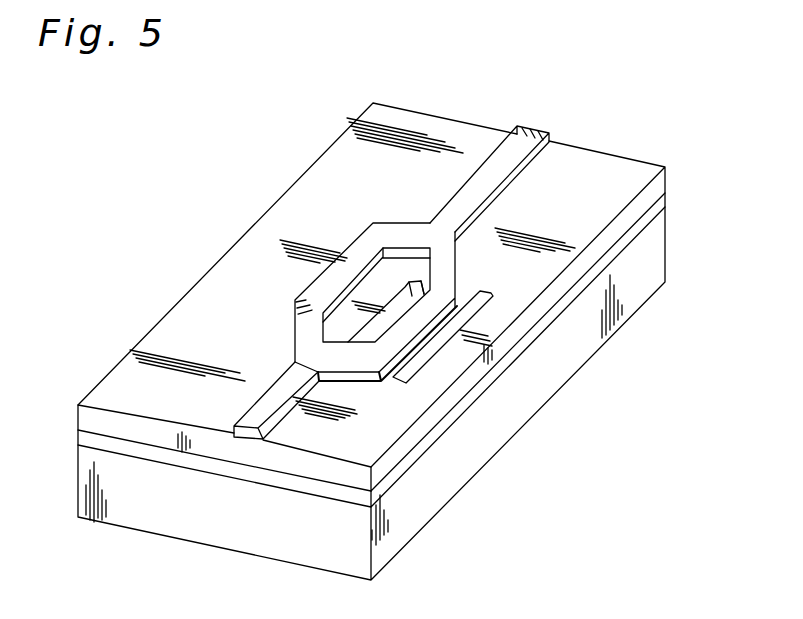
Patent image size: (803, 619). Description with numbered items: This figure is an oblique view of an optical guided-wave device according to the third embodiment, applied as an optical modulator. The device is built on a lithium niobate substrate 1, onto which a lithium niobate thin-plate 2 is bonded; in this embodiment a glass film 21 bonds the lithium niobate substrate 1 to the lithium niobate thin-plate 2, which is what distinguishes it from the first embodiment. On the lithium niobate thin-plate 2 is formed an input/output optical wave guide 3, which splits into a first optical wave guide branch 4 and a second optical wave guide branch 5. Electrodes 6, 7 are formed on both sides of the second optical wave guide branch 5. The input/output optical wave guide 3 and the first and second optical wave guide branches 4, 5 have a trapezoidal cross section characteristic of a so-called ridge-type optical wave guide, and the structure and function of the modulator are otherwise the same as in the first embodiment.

The lithium niobate substrate 1 is at (543, 384).
The lithium niobate thin-plate 2 is at (653, 193).
The glass film 21 is at (142, 454).
The input/output optical wave guide 3 is at (503, 165).
The first optical wave guide branch 4 is at (335, 287).
The second optical wave guide branch 5 is at (445, 282).
The electrode 6 is at (408, 284).
The electrode 7 is at (458, 316).